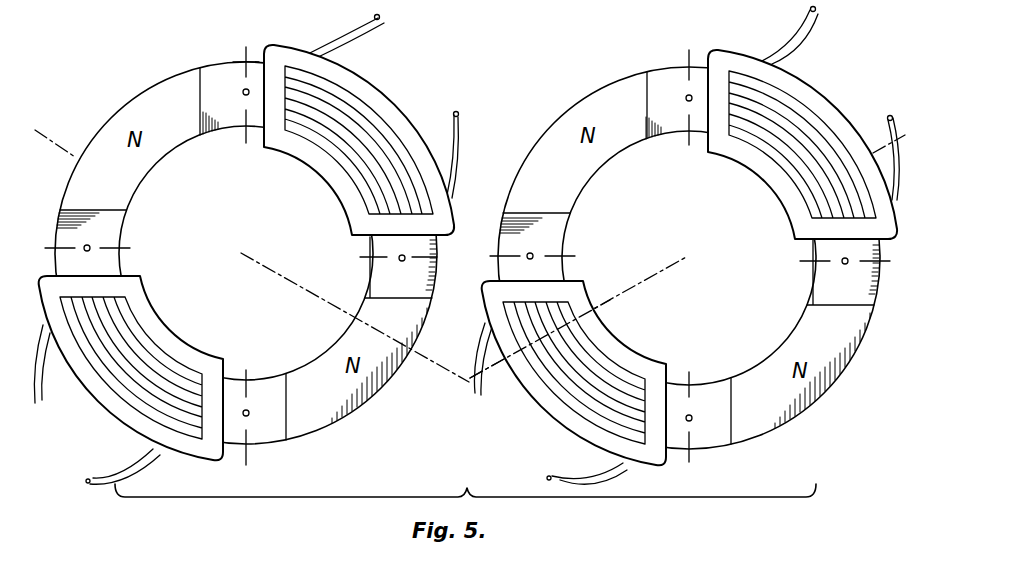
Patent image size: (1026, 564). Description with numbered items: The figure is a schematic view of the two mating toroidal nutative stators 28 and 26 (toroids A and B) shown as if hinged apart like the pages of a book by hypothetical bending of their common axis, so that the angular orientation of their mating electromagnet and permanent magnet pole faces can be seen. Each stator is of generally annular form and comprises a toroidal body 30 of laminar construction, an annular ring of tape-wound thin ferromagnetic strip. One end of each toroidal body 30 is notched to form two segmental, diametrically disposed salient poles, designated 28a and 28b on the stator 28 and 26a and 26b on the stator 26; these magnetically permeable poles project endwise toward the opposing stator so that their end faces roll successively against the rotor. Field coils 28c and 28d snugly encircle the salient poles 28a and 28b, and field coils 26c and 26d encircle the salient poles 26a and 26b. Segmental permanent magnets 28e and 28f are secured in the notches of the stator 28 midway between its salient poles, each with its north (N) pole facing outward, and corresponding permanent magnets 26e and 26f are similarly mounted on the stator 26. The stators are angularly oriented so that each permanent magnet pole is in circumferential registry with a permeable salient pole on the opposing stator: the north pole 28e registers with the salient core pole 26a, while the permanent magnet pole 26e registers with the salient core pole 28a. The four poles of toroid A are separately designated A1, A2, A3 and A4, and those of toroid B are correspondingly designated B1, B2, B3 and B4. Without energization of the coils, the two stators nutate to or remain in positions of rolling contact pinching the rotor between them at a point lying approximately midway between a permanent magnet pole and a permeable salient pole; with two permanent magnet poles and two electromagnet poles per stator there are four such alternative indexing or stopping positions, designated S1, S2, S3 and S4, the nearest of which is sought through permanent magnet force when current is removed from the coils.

The nutative stator 26 is at (879, 291).
The salient pole 26a is at (793, 163).
The salient pole 26b is at (603, 362).
The field coil 26c is at (803, 123).
The field coil 26d is at (556, 375).
The permanent magnet 26e is at (618, 87).
The permanent magnet 26f is at (768, 418).
The nutative stator 28 is at (437, 289).
The salient pole 28a is at (385, 143).
The salient pole 28b is at (115, 368).
The field coil 28c is at (361, 125).
The field coil 28d is at (128, 380).
The permanent magnet 28e is at (170, 80).
The permanent magnet 28f is at (328, 415).
The toroidal body 30 is at (214, 63).
The indexing position S1 is at (245, 96).
The indexing position S2 is at (92, 247).
The indexing position S3 is at (246, 412).
The indexing position S4 is at (398, 260).
The pole of toroid A A1 is at (405, 90).
The pole of toroid A A2 is at (390, 406).
The pole of toroid A A3 is at (76, 428).
The pole of toroid A A4 is at (91, 154).
The pole of toroid B B1 is at (544, 156).
The pole of toroid B B2 is at (521, 426).
The pole of toroid B B3 is at (847, 401).
The pole of toroid B B4 is at (841, 86).